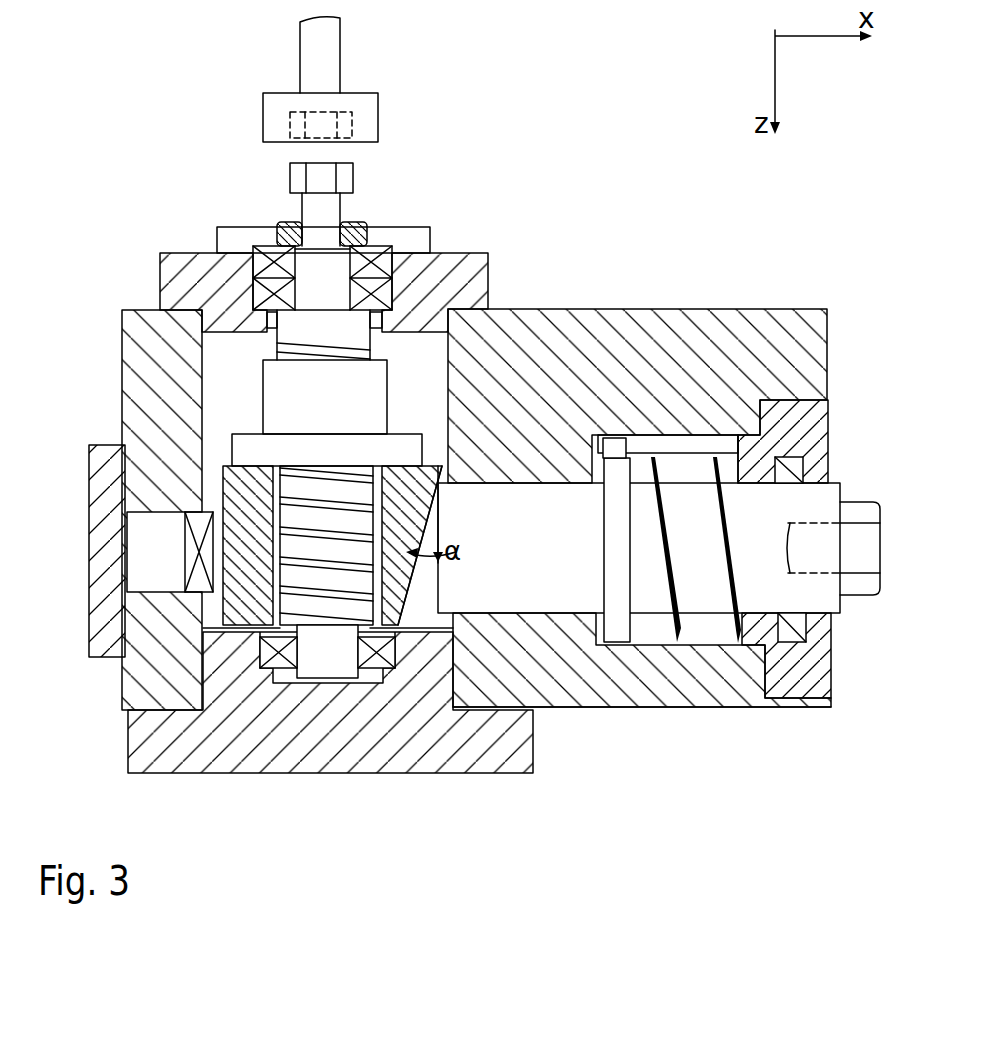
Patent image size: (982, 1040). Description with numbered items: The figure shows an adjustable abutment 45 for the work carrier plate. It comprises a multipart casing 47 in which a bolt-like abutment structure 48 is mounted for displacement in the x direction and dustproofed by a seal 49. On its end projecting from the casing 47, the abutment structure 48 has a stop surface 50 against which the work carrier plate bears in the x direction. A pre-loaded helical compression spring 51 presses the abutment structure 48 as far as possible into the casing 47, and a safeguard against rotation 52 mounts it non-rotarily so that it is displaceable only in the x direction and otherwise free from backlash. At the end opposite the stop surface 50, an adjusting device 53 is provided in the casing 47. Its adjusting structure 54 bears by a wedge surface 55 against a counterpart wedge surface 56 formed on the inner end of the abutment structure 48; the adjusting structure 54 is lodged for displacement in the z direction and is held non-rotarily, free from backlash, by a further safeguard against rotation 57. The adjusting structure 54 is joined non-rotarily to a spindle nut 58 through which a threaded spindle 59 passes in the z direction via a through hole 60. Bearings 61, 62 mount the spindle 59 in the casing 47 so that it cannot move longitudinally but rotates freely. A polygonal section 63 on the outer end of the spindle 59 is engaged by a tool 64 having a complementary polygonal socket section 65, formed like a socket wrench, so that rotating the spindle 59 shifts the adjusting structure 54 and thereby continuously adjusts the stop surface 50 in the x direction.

The abutment 45 is at (640, 746).
The casing 47 is at (573, 716).
The abutment structure 48 is at (752, 603).
The seal 49 is at (795, 630).
The stop surface 50 is at (883, 557).
The helical compression spring 51 is at (680, 626).
The safeguard against rotation 52 is at (616, 438).
The adjusting device 53 is at (350, 700).
The adjusting structure 54 is at (398, 627).
The wedge surface 55 is at (387, 522).
The counterpart wedge surface 56 is at (401, 578).
The safeguard against rotation 57 is at (188, 540).
The spindle nut 58 is at (275, 397).
The threaded spindle 59 is at (280, 578).
The through hole 60 is at (272, 614).
The bearing 61 is at (287, 664).
The bearing 62 is at (274, 252).
The polygonal section 63 is at (290, 178).
The tool 64 is at (278, 75).
The polygonal socket section 65 is at (290, 128).